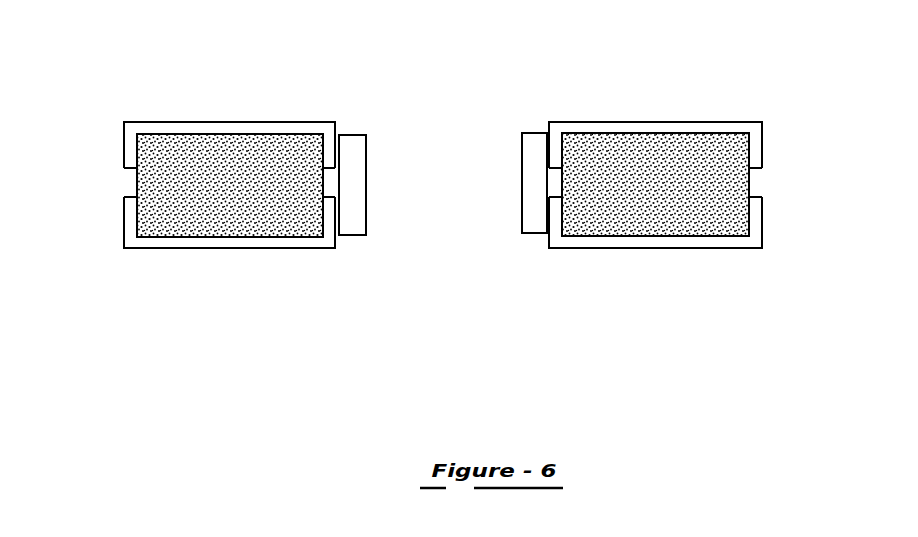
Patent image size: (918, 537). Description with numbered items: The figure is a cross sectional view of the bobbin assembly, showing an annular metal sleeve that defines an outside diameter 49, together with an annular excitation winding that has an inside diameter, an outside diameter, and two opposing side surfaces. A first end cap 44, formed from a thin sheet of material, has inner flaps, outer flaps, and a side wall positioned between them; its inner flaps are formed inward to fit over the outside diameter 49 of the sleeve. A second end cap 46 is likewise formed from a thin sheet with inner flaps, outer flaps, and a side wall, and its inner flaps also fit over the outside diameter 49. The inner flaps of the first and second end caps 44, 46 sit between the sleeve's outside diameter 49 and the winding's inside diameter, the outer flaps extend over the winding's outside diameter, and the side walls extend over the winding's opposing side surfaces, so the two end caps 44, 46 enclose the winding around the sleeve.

The first end cap 44 is at (302, 122).
The second end cap 46 is at (283, 249).
The outside diameter 49 is at (547, 206).